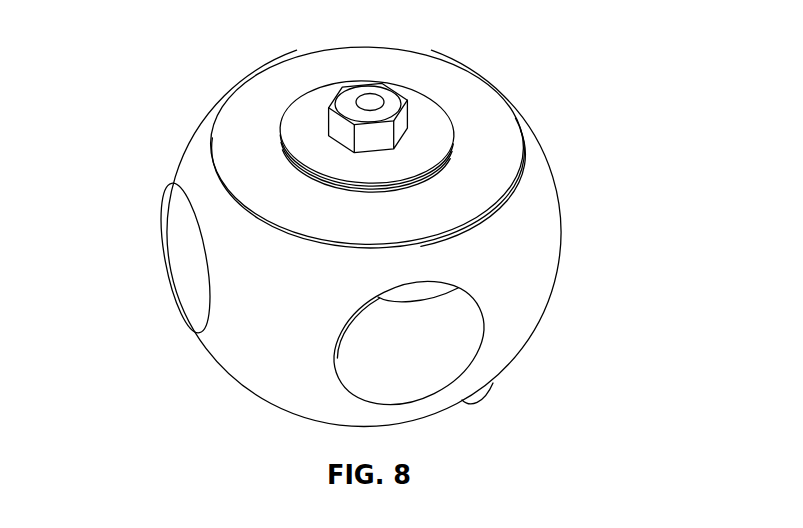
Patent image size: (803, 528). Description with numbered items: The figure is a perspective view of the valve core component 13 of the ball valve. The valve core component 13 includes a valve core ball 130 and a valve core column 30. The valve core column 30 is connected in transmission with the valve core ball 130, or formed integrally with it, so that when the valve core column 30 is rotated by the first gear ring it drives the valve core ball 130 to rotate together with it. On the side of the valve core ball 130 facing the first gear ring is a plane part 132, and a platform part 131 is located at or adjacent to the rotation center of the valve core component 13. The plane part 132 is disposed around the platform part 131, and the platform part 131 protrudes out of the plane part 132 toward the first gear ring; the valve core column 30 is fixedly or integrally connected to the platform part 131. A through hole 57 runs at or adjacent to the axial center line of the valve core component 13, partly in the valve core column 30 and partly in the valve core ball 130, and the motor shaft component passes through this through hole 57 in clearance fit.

The valve core ball 130 is at (535, 235).
The valve core component 13 is at (165, 160).
The valve core column 30 is at (321, 114).
The through hole 57 is at (389, 92).
The platform part 131 is at (446, 118).
The plane part 132 is at (464, 202).